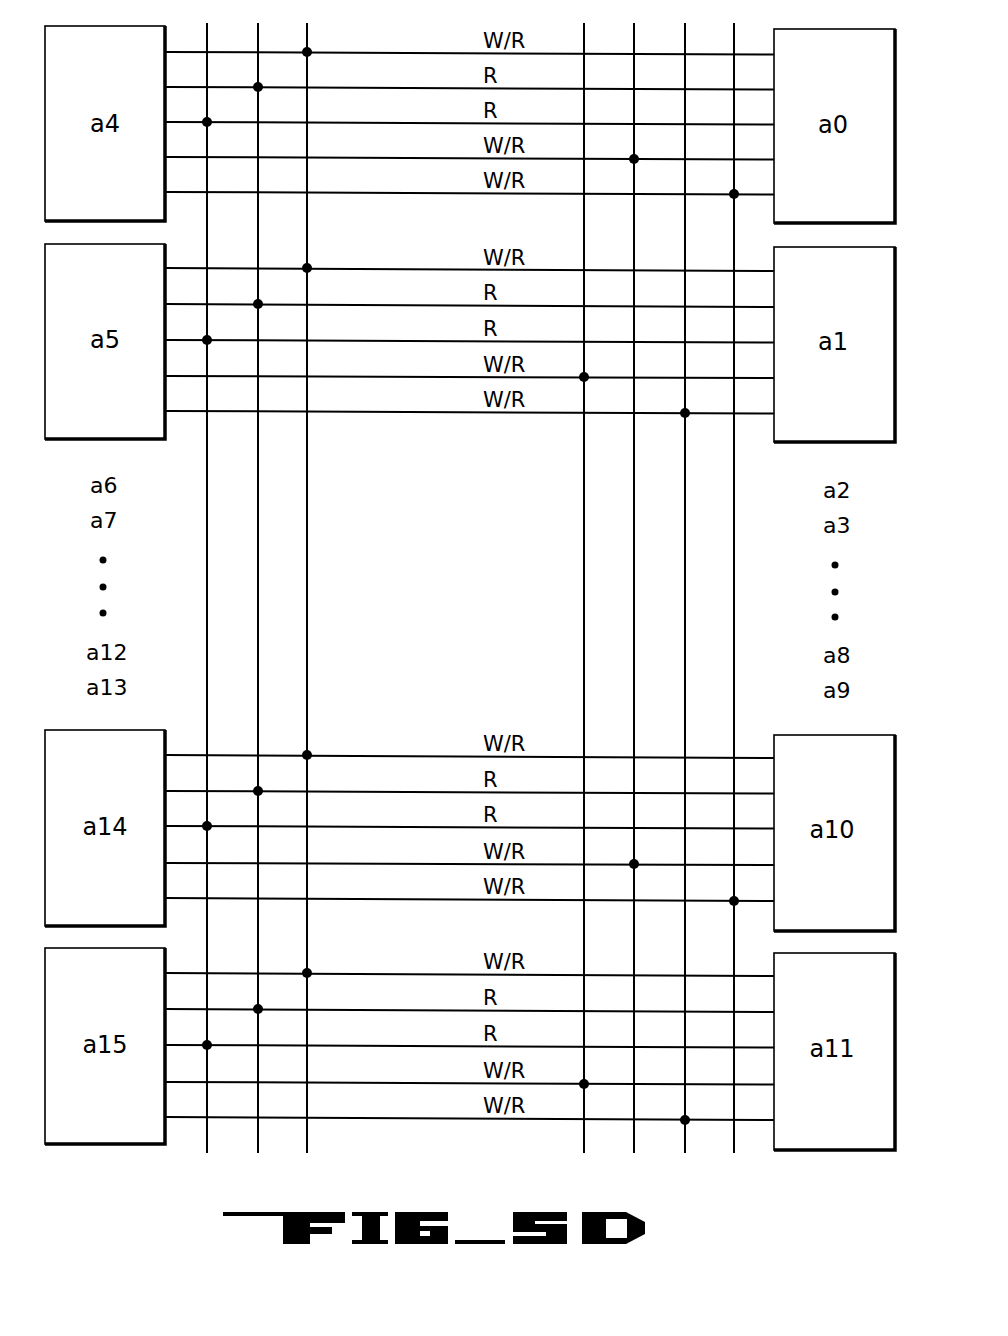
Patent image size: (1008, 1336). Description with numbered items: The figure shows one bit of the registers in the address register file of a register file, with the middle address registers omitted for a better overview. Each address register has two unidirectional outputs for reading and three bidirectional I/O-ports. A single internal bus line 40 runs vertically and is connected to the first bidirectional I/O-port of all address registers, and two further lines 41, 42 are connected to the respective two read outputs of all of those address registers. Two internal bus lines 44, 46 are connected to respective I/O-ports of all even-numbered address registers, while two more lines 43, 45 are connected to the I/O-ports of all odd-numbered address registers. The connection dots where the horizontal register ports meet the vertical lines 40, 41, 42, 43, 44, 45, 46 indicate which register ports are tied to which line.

The internal bus line 40 is at (307, 642).
The line 41 is at (258, 598).
The line 42 is at (207, 553).
The line 43 is at (584, 543).
The internal bus line 44 is at (634, 587).
The line 45 is at (685, 632).
The internal bus line 46 is at (735, 670).